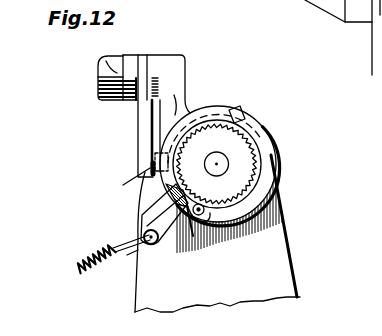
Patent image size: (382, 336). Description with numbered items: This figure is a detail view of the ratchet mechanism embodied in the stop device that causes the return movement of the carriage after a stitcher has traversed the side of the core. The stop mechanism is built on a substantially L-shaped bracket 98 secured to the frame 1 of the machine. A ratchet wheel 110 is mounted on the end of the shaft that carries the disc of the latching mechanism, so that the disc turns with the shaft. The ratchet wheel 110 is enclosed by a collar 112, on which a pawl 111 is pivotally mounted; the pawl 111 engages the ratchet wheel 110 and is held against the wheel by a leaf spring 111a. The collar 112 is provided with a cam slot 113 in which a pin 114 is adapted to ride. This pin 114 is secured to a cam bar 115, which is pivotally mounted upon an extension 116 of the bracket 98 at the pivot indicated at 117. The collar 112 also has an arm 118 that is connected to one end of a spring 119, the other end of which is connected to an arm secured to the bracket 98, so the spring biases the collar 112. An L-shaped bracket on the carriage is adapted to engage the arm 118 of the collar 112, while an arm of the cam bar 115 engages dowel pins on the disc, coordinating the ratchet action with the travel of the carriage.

The bracket 98 is at (289, 288).
The ratchet wheel 110 is at (245, 145).
The pawl 111 is at (181, 238).
The leaf spring 111a is at (172, 186).
The collar 112 is at (258, 190).
The cam slot 113 is at (233, 102).
The pin 114 is at (157, 158).
The cam bar 115 is at (145, 123).
The extension 116 is at (168, 68).
The pivot 117 is at (103, 62).
The arm 118 is at (142, 227).
The spring 119 is at (84, 277).
The frame 1 is at (380, 44).